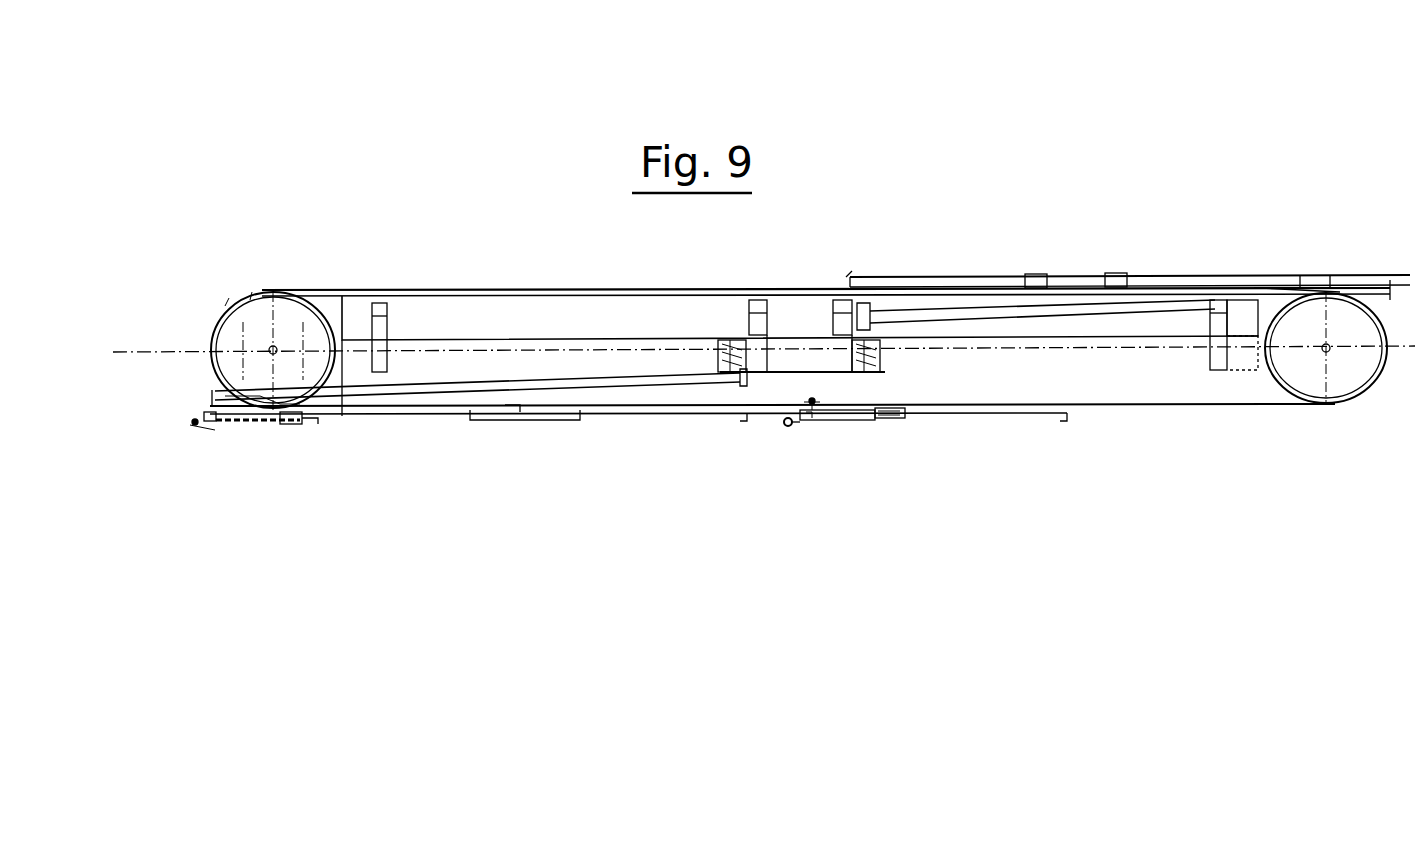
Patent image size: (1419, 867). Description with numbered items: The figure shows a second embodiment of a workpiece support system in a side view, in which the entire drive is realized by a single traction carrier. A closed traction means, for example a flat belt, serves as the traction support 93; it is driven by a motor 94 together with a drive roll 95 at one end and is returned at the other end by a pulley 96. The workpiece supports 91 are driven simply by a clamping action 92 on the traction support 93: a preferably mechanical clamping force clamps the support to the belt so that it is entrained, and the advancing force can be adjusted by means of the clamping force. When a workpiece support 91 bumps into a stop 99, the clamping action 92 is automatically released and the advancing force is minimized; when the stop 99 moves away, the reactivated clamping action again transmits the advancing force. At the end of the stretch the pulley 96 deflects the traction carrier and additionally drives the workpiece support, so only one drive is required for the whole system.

The workpiece support 91 is at (840, 420).
The clamping action 92 is at (900, 413).
The traction support 93 is at (780, 408).
The motor 94 is at (288, 323).
The drive roll 95 is at (247, 322).
The pulley 96 is at (1352, 367).
The stop 99 is at (217, 413).